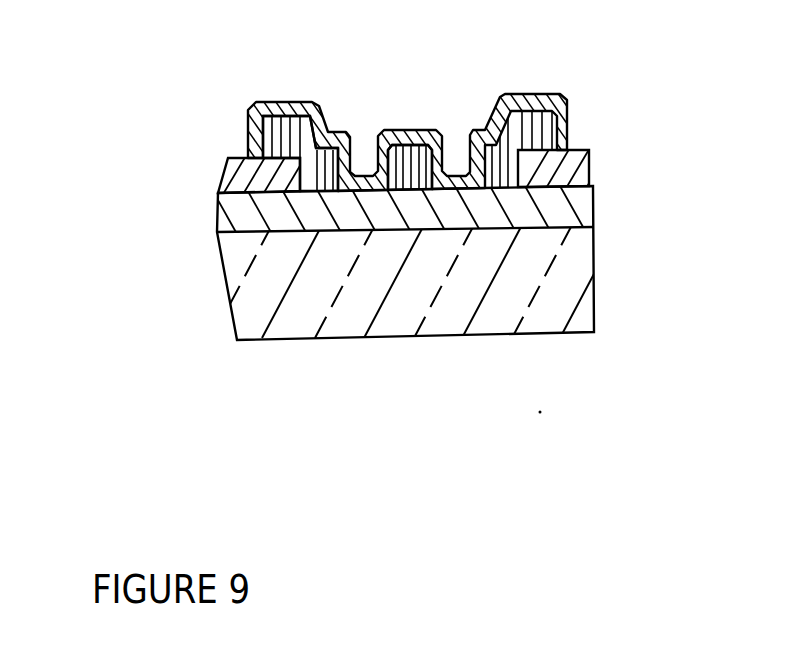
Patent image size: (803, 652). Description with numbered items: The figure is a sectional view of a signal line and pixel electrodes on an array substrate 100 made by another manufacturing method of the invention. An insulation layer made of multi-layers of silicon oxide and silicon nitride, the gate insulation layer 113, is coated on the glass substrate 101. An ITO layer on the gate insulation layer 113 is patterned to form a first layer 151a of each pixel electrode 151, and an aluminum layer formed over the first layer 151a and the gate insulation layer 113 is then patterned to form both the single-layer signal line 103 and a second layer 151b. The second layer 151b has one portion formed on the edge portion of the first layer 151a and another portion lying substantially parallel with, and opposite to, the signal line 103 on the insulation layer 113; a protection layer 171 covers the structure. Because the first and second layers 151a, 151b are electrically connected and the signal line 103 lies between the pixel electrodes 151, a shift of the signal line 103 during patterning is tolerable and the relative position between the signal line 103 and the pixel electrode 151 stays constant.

The array substrate 100 is at (395, 177).
The glass substrate 101 is at (594, 270).
The gate insulation layer 113 is at (592, 204).
The pixel electrode 151 is at (395, 105).
The first layer 151a is at (232, 169).
The second layer 151b is at (247, 111).
The protection layer 171 is at (288, 105).
The signal line 103 is at (409, 129).